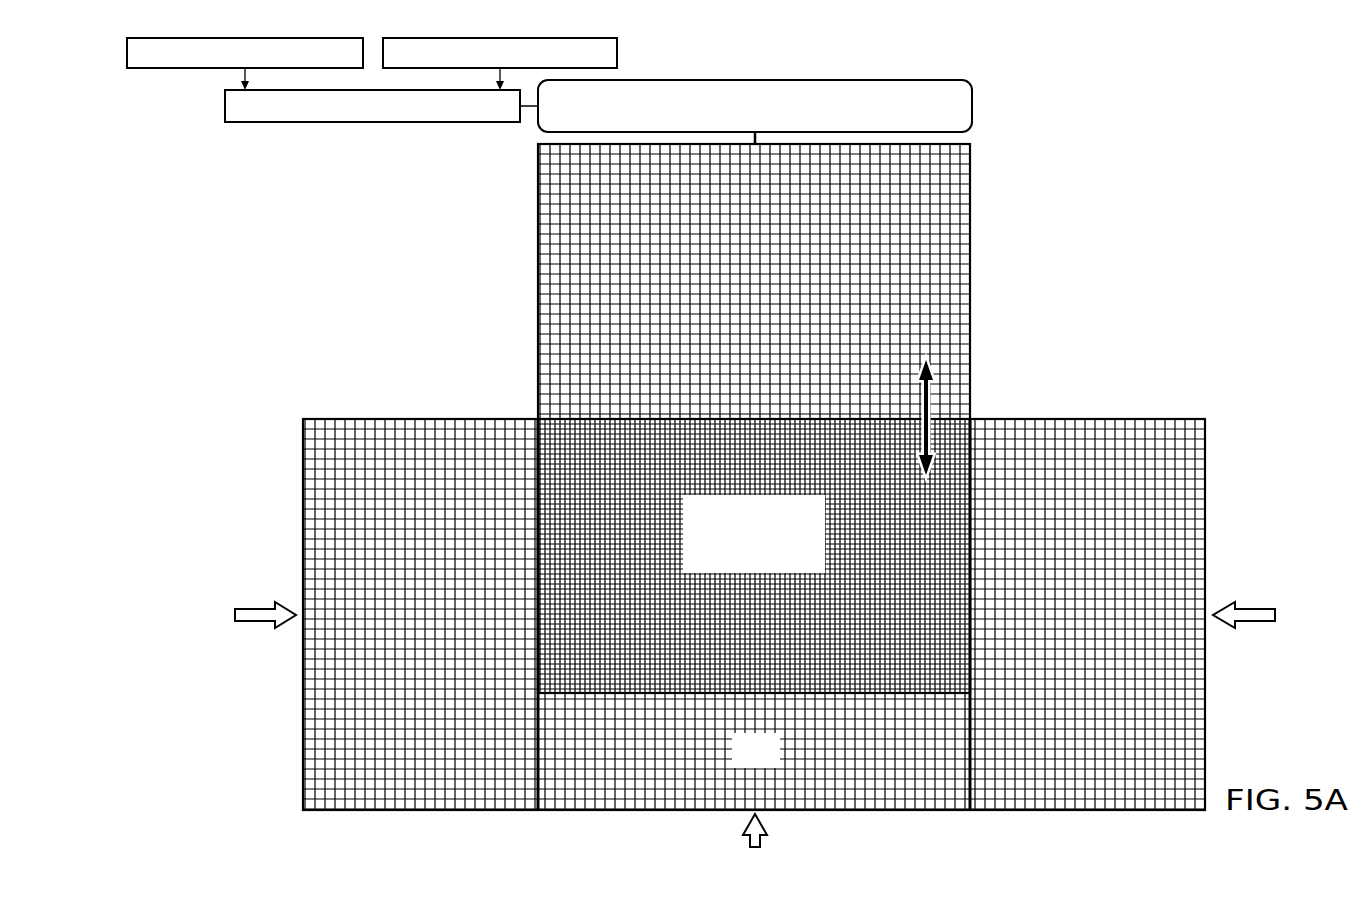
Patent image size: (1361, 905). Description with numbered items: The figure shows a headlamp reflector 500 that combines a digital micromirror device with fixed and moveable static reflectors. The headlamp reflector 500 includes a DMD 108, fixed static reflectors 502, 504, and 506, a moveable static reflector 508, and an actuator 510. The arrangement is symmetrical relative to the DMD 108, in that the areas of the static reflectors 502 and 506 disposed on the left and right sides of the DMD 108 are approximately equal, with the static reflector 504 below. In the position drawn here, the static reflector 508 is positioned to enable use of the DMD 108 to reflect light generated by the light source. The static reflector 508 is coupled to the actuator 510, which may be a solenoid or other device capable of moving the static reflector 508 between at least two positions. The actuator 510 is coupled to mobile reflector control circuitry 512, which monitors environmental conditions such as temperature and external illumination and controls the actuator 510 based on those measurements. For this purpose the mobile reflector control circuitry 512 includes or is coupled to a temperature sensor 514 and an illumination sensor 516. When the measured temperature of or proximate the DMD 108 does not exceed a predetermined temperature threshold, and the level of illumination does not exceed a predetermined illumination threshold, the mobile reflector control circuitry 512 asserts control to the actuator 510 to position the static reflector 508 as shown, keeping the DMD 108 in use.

The headlamp reflector 500 is at (1190, 122).
The fixed static reflector 502 is at (394, 416).
The fixed static reflector 504 is at (773, 763).
The fixed static reflector 506 is at (1116, 416).
The moveable static reflector 508 is at (974, 275).
The actuator 510 is at (764, 80).
The mobile reflector control circuitry 512 is at (373, 123).
The temperature sensor 514 is at (198, 69).
The illumination sensor 516 is at (618, 53).
The DMD 108 is at (772, 606).